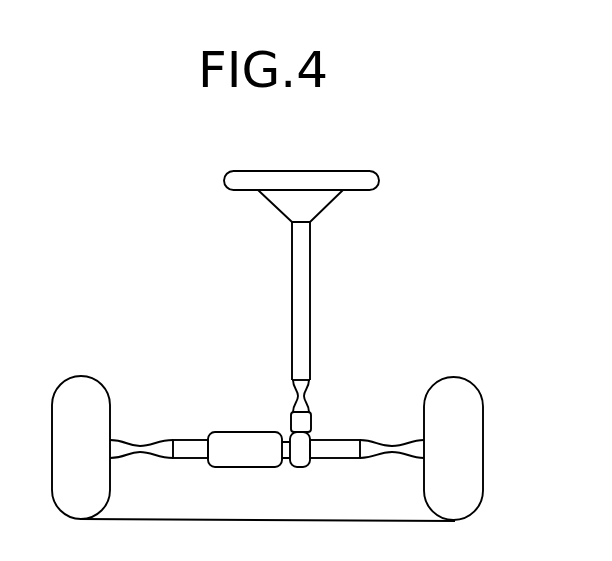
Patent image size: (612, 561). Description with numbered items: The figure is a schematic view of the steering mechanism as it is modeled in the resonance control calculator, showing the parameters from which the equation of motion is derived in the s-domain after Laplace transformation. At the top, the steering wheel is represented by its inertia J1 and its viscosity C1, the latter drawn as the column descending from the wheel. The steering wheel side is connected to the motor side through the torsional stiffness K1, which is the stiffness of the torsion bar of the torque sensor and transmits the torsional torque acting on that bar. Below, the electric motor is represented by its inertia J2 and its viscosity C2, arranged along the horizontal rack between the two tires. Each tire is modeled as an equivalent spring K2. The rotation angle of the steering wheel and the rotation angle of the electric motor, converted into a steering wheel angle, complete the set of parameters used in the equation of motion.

The inertia of the steering wheel J1 is at (285, 208).
The viscosity of the steering wheel C1 is at (327, 301).
The torsional stiffness K1 is at (326, 406).
The inertia of the electric motor J2 is at (249, 432).
The viscosity of the electric motor C2 is at (161, 471).
The equivalent spring modeling the tires K2 is at (100, 447).